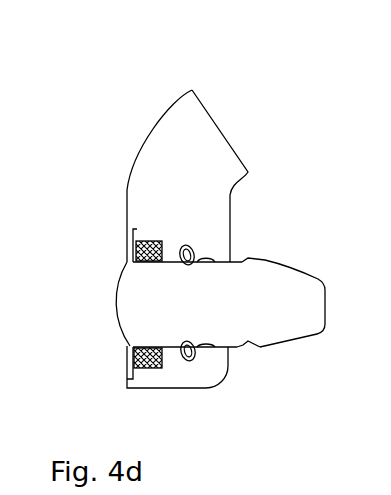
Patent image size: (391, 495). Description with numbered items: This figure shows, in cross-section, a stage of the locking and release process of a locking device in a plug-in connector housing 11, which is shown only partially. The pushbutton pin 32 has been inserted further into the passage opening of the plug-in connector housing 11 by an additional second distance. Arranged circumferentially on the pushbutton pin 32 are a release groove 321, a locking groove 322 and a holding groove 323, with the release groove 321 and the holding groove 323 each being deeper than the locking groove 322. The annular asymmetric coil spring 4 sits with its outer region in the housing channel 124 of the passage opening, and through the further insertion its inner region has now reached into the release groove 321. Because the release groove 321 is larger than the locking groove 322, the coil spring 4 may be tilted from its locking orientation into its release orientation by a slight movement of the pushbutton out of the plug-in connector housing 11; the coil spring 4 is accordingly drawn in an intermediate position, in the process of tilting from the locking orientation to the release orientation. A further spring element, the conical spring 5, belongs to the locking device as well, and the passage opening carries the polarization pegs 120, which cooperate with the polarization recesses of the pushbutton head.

The plug-in connector housing 11 is at (172, 104).
The housing channel 124 is at (186, 246).
The asymmetric coil spring 4 is at (192, 246).
The locking groove 322 is at (196, 342).
The release groove 321 is at (184, 341).
The holding groove 323 is at (249, 345).
The pushbutton pin 32 is at (306, 346).
The conical spring 5 is at (155, 240).
The polarization peg 120 is at (130, 365).